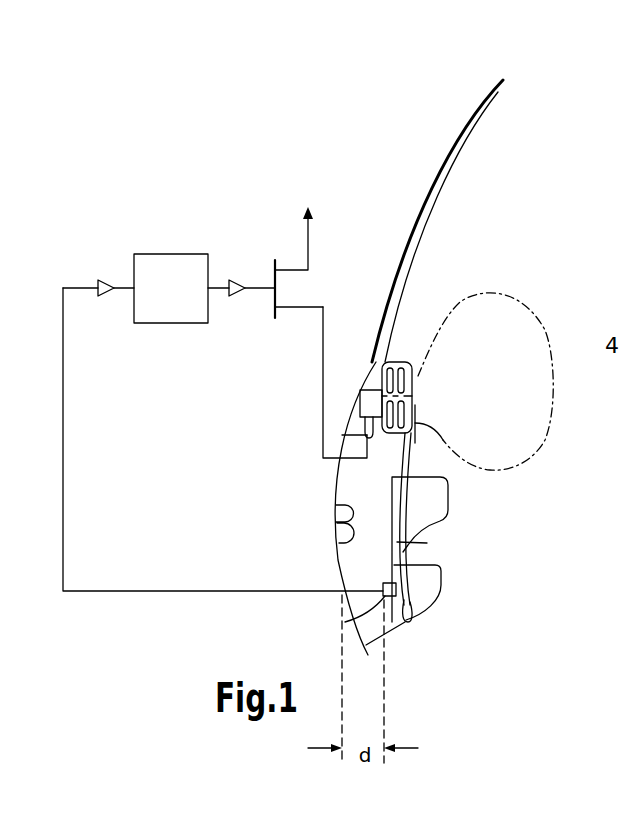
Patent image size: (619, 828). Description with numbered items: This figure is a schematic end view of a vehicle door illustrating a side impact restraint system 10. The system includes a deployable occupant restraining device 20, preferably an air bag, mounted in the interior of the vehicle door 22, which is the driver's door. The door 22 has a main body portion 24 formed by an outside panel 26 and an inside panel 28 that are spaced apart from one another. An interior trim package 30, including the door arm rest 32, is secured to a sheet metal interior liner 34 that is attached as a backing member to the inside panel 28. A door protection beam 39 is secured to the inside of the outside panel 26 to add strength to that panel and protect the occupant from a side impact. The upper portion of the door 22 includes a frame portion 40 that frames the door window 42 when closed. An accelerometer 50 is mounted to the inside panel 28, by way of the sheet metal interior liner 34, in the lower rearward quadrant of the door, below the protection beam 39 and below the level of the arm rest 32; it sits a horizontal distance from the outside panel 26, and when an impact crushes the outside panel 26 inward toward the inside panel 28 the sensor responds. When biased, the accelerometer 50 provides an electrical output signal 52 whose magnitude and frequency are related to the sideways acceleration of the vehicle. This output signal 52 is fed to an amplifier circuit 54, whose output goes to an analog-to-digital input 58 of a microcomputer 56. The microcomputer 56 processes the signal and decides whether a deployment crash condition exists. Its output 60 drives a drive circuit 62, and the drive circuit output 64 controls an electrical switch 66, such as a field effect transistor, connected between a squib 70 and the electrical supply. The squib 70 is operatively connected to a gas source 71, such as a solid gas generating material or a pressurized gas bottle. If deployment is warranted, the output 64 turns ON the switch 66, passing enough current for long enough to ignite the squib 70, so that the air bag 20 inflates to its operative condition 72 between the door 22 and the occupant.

The side impact restraint system 10 is at (340, 124).
The deployable occupant restraining device 20 is at (412, 396).
The vehicle door 22 is at (298, 508).
The main body portion 24 is at (330, 438).
The outside panel 26 is at (337, 467).
The inside panel 28 is at (407, 621).
The interior trim package 30 is at (518, 530).
The door arm rest 32 is at (434, 498).
The sheet metal interior liner 34 is at (427, 543).
The door protection beam 39 is at (333, 515).
The frame portion 40 is at (480, 79).
The door window 42 is at (426, 212).
The accelerometer 50 is at (345, 620).
The electrical output signal 52 is at (308, 590).
The amplifier circuit 54 is at (106, 281).
The microcomputer 56 is at (170, 256).
The analog-to-digital input 58 is at (130, 291).
The output of the microcomputer 60 is at (209, 291).
The drive circuit 62 is at (238, 282).
The output of the drive circuit 64 is at (252, 290).
The electrical switch 66 is at (322, 279).
The squib 70 is at (370, 426).
The gas source 71 is at (372, 405).
The operative condition 72 is at (552, 335).